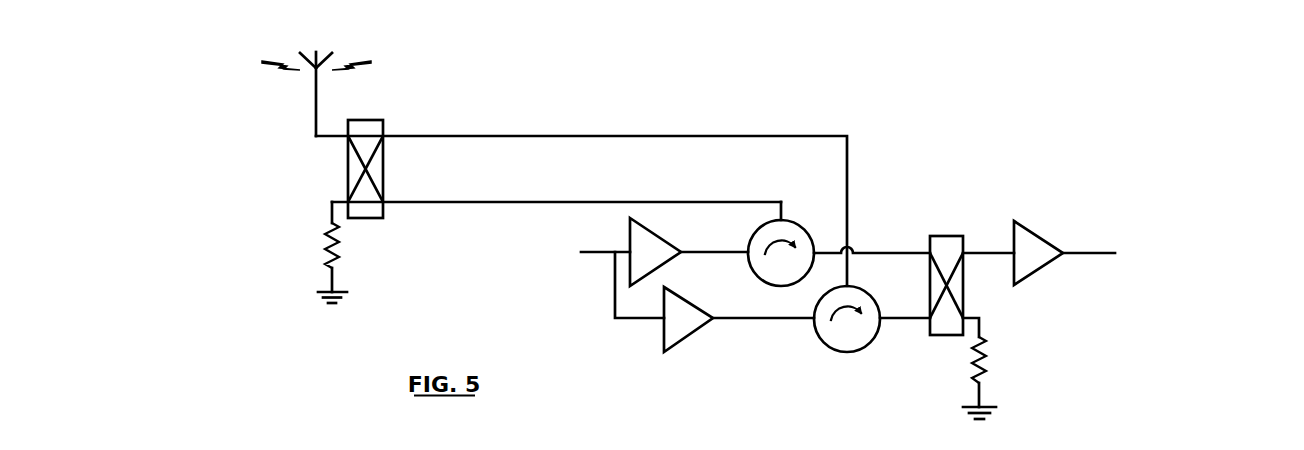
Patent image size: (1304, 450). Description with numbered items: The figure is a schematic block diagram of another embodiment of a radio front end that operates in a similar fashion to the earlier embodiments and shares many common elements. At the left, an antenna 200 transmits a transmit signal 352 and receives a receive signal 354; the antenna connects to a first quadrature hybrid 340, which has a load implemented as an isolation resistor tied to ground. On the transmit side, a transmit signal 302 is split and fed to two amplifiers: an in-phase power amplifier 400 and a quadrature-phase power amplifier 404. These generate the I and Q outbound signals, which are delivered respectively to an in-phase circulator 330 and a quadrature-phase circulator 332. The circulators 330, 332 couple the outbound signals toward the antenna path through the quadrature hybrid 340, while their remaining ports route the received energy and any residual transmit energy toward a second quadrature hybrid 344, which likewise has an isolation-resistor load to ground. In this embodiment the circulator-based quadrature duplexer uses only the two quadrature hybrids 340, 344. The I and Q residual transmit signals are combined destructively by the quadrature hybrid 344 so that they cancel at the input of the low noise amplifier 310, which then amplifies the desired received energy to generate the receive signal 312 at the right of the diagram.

The antenna 200 is at (300, 94).
The transmit signal 352 is at (233, 69).
The receive signal 354 is at (398, 69).
The quadrature hybrid 340 is at (364, 232).
The quadrature hybrid 344 is at (948, 350).
The transmit signal 302 is at (576, 277).
The receive signal 312 is at (1142, 241).
The in-phase power amplifier 400 is at (655, 252).
The quadrature-phase power amplifier 404 is at (688, 319).
The in-phase circulator 330 is at (781, 253).
The quadrature-phase circulator 332 is at (847, 319).
The low noise amplifier 310 is at (1013, 253).